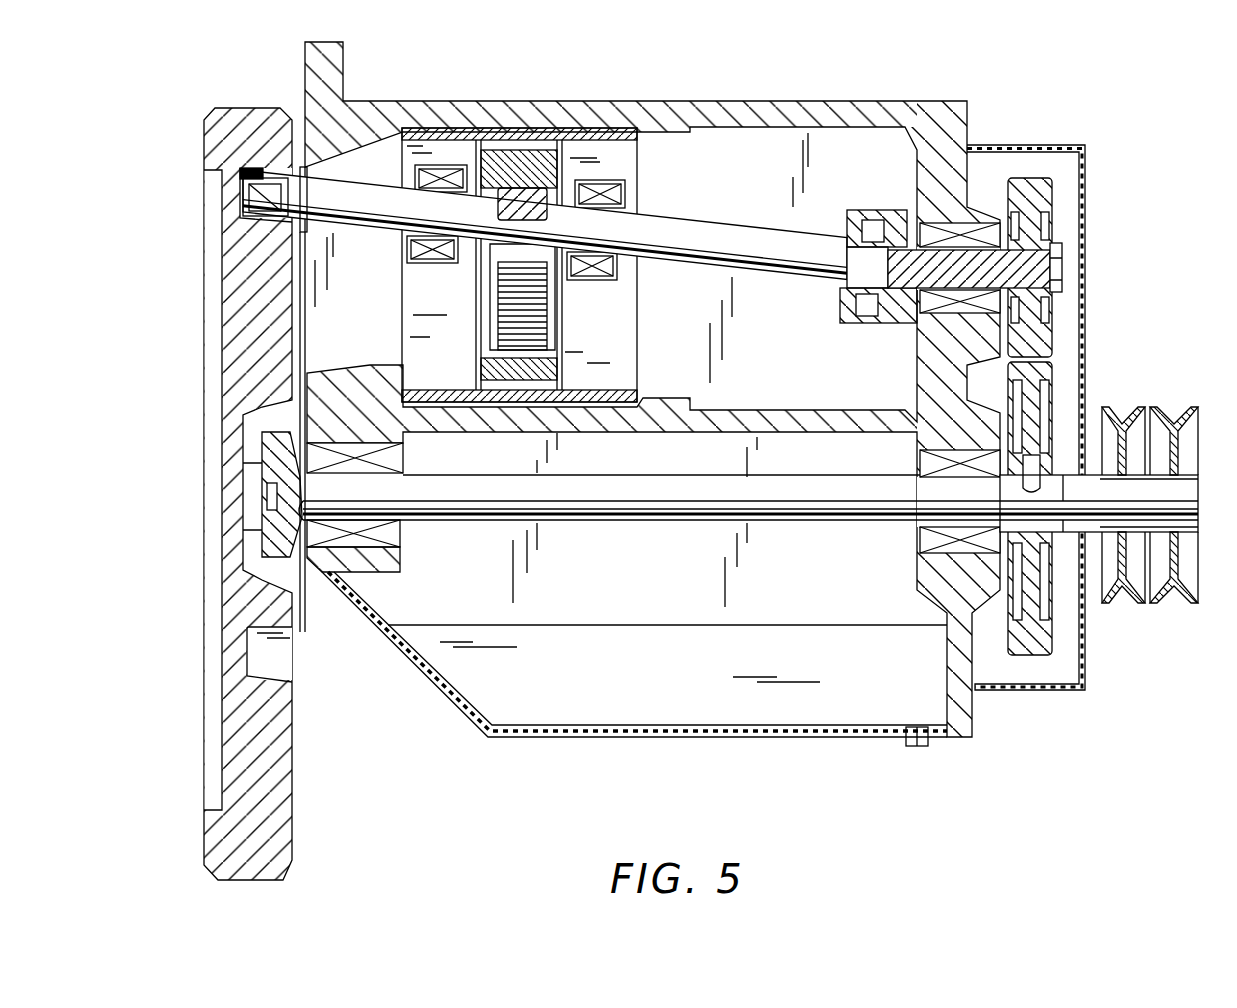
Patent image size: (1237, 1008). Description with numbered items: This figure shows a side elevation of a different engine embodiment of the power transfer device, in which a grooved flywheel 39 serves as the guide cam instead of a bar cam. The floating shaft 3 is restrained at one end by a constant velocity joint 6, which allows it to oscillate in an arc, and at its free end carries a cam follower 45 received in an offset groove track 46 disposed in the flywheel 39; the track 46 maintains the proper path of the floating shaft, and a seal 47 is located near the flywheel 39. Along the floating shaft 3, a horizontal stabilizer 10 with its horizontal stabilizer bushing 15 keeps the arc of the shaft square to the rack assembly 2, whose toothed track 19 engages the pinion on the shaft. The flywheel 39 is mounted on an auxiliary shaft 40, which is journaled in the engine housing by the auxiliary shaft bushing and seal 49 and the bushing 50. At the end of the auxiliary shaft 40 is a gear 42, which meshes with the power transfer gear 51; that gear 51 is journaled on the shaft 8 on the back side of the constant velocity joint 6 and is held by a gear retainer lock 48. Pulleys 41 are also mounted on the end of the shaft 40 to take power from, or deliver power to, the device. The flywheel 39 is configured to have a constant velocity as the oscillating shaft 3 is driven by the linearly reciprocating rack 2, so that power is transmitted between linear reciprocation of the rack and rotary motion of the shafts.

The rack assembly 2 is at (428, 348).
The floating shaft 3 is at (814, 255).
The constant velocity joint 6 is at (893, 210).
The shaft 8 is at (1025, 272).
The horizontal stabilizer 10 is at (410, 290).
The horizontal stabilizer bushing 15 is at (433, 170).
The toothed track 19 is at (553, 318).
The flywheel 39 is at (230, 272).
The auxiliary shaft 40 is at (262, 476).
The pulleys 41 is at (1175, 418).
The power transfer gear 42 is at (1040, 370).
The cam follower 45 is at (245, 200).
The offset groove track 46 is at (245, 172).
The seal 47 is at (306, 188).
The gear retainer lock 48 is at (1060, 252).
The auxiliary shaft bushing and seal 49 is at (400, 458).
The bushing 50 is at (917, 462).
The power transfer gear 51 is at (1024, 178).